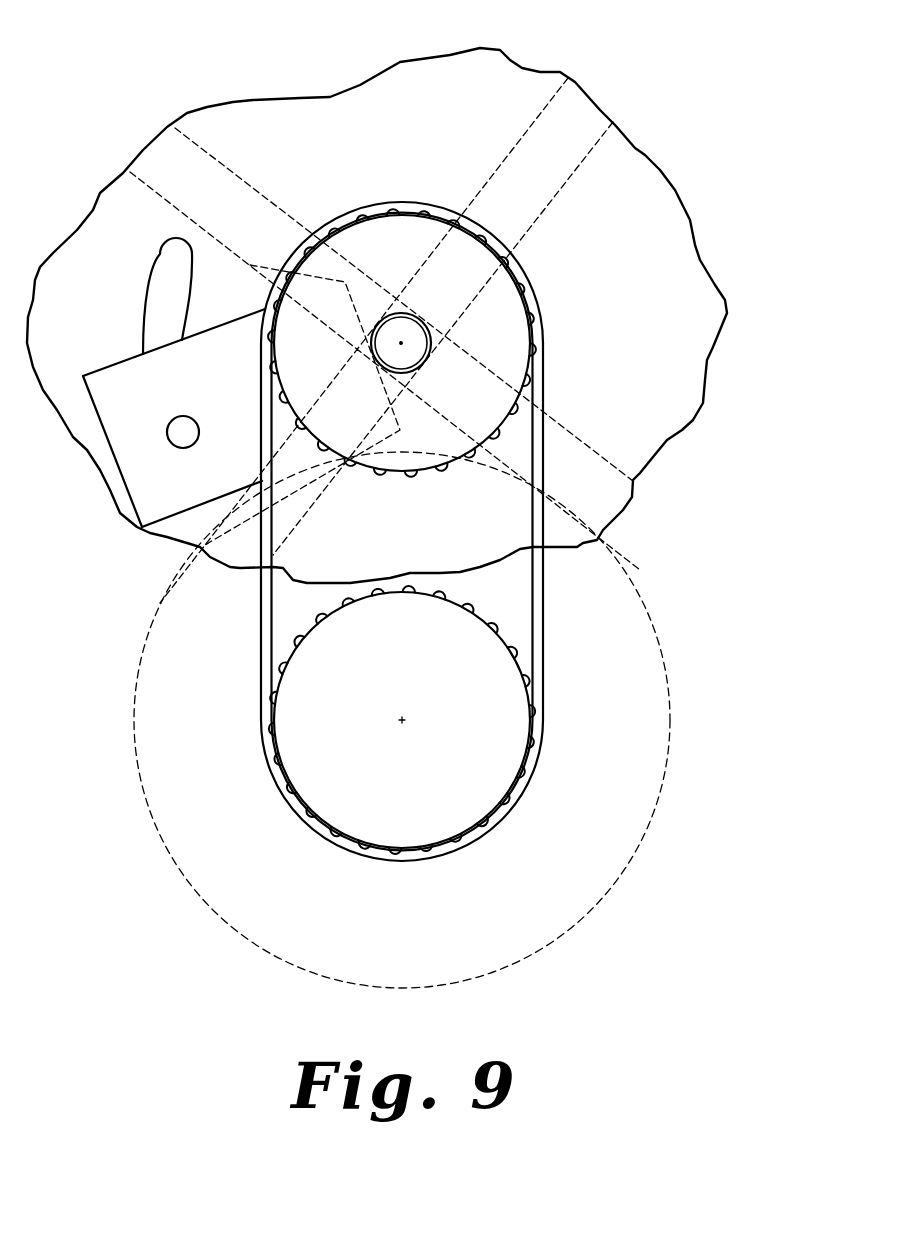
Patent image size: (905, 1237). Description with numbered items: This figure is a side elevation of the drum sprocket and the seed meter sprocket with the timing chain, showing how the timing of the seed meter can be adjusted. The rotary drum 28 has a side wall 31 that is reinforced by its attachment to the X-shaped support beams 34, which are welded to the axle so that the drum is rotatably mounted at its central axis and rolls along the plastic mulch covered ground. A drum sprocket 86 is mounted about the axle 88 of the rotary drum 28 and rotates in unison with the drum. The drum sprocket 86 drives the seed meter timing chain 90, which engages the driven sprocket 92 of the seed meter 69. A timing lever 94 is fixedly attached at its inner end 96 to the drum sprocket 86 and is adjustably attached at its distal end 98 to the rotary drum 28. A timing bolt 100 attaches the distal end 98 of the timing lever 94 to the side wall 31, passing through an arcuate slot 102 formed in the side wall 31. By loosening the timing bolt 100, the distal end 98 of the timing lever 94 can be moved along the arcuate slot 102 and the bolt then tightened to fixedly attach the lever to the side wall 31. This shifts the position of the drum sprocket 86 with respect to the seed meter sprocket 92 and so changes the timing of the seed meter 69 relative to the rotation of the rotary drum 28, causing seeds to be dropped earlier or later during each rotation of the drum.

The rotary drum 28 is at (640, 200).
The side wall 31 is at (672, 278).
The X-shaped support beams 34 is at (535, 117).
The seed meter 69 is at (675, 705).
The drum sprocket 86 is at (505, 343).
The axle 88 is at (393, 328).
The seed meter timing chain 90 is at (545, 565).
The driven sprocket 92 is at (480, 795).
The timing lever 94 is at (118, 385).
The inner end 96 is at (350, 293).
The distal end 98 is at (148, 497).
The timing bolt 100 is at (185, 418).
The arcuate slot 102 is at (167, 267).